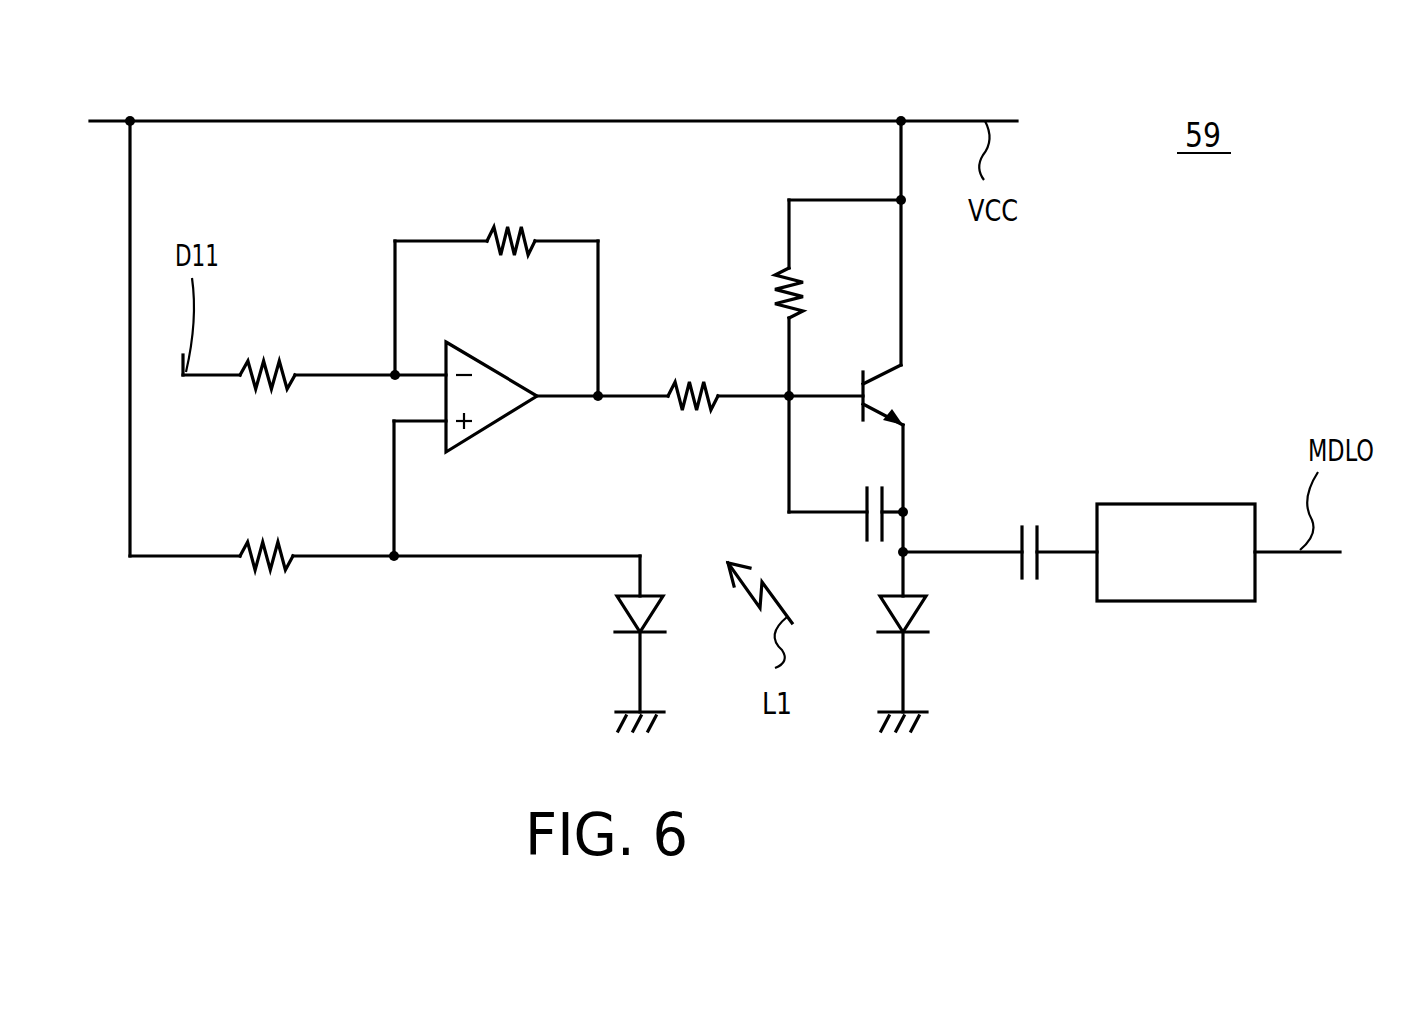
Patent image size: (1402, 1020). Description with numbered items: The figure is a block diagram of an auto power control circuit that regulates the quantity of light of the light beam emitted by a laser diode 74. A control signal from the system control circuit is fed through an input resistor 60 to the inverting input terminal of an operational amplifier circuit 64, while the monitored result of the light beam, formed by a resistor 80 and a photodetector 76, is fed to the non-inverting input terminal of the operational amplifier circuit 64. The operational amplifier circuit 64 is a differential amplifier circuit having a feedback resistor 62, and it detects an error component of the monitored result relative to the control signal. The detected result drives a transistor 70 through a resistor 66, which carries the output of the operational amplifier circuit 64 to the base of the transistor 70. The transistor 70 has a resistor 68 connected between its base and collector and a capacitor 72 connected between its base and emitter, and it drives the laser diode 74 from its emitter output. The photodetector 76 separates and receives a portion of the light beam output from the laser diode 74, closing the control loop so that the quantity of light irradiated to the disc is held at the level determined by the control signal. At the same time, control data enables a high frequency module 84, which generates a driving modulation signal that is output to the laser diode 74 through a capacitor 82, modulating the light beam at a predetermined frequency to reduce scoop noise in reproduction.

The input resistor 60 is at (268, 350).
The feedback resistor 62 is at (525, 228).
The operational amplifier circuit 64 is at (506, 377).
The resistor 66 is at (678, 374).
The resistor 68 is at (798, 268).
The transistor 70 is at (898, 365).
The capacitor 72 is at (869, 518).
The laser diode 74 is at (917, 604).
The photodetector 76 is at (616, 602).
The resistor 80 is at (271, 578).
The capacitor 82 is at (1040, 530).
The high frequency module 84 is at (1205, 603).